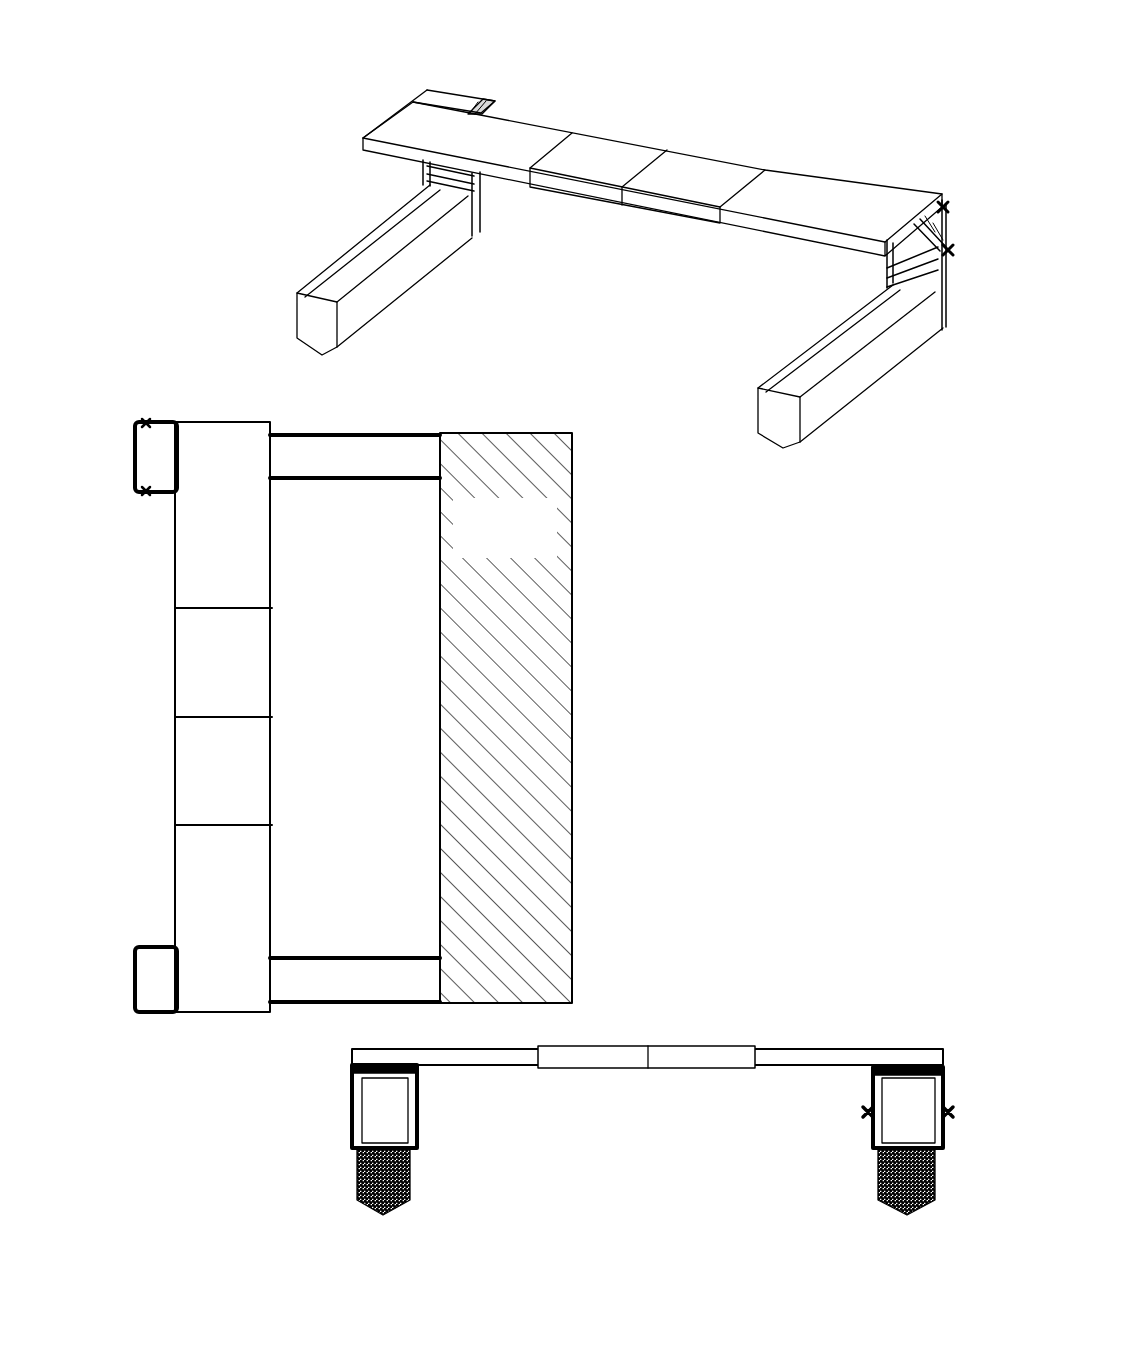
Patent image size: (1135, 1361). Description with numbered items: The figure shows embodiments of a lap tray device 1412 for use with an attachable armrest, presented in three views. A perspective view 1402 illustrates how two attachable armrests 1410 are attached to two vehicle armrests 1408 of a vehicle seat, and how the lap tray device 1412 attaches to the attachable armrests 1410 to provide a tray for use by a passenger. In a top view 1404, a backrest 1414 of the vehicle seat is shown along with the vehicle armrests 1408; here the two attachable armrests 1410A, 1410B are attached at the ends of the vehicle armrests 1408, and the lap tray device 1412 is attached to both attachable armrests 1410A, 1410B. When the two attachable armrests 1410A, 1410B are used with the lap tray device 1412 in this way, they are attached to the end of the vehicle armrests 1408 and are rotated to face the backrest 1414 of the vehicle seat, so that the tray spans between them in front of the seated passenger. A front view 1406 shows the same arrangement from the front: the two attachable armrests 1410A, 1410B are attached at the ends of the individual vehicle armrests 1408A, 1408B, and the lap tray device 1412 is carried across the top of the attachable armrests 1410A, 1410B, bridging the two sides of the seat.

The perspective view 1402 is at (384, 60).
The top view 1404 is at (637, 572).
The front view 1406 is at (878, 1000).
The vehicle armrests 1408 is at (428, 290).
The vehicle armrest 1408A is at (386, 1186).
The vehicle armrest 1408B is at (902, 1190).
The attachable armrests 1410 is at (884, 177).
The attachable armrest 1410A is at (153, 447).
The attachable armrest 1410B is at (152, 983).
The lap tray device 1412 is at (610, 1101).
The backrest 1414 is at (517, 729).